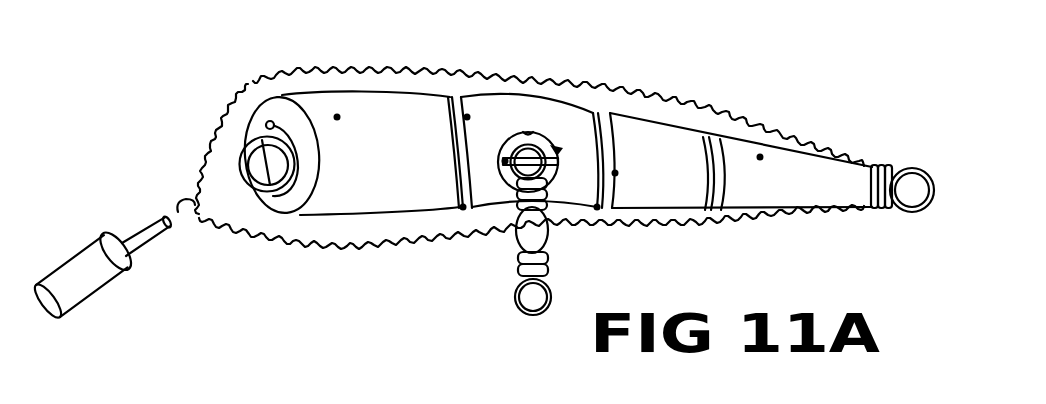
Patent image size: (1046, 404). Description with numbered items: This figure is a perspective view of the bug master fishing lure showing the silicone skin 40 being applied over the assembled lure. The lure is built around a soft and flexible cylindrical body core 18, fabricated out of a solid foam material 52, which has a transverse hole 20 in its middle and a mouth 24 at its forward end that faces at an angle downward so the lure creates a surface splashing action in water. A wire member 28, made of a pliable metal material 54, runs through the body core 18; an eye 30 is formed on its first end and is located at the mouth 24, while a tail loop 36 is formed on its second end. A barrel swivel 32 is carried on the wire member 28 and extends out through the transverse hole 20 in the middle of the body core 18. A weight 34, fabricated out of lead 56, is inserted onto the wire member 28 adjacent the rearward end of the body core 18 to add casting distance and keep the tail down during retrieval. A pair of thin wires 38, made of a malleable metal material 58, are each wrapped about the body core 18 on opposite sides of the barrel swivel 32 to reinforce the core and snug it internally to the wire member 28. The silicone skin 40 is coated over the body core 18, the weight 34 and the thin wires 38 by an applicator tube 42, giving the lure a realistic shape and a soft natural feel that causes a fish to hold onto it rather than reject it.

The cylindrical body core 18 is at (372, 110).
The transverse hole 20 is at (526, 131).
The mouth 24 is at (267, 120).
The wire member 28 is at (556, 150).
The eye 30 is at (237, 167).
The barrel swivel 32 is at (524, 233).
The weight 34 is at (828, 170).
The tail loop 36 is at (912, 167).
The thin wire 38 is at (450, 97).
The silicone skin 40 is at (675, 100).
The applicator tube 42 is at (97, 256).
The solid foam material 52 is at (337, 117).
The pliable metal material 54 is at (505, 160).
The lead 56 is at (760, 157).
The malleable metal material 58 is at (467, 117).